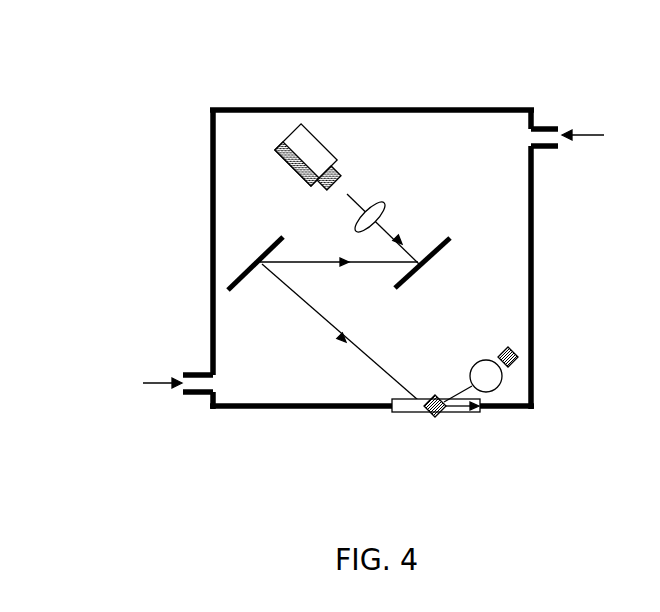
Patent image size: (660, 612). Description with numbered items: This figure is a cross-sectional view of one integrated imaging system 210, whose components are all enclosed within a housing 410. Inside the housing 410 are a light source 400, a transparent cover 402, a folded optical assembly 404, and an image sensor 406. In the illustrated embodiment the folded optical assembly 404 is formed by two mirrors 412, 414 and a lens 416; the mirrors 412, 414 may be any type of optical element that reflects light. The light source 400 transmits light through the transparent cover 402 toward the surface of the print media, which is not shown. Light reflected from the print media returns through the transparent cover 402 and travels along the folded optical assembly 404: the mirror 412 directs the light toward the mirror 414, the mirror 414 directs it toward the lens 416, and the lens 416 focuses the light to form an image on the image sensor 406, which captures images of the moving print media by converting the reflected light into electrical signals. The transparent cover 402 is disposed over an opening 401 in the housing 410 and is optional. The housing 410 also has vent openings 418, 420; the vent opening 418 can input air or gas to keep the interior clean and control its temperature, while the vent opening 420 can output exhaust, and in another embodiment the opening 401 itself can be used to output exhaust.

The integrated imaging system 210 is at (226, 66).
The housing 410 is at (210, 196).
The vent opening 418 is at (587, 133).
The vent opening 420 is at (158, 382).
The folded optical assembly 404 is at (285, 350).
The image sensor 406 is at (323, 144).
The lens 416 is at (372, 203).
The mirror 414 is at (445, 250).
The mirror 412 is at (275, 240).
The transparent cover 402 is at (412, 413).
The opening 401 is at (476, 413).
The light source 400 is at (487, 359).